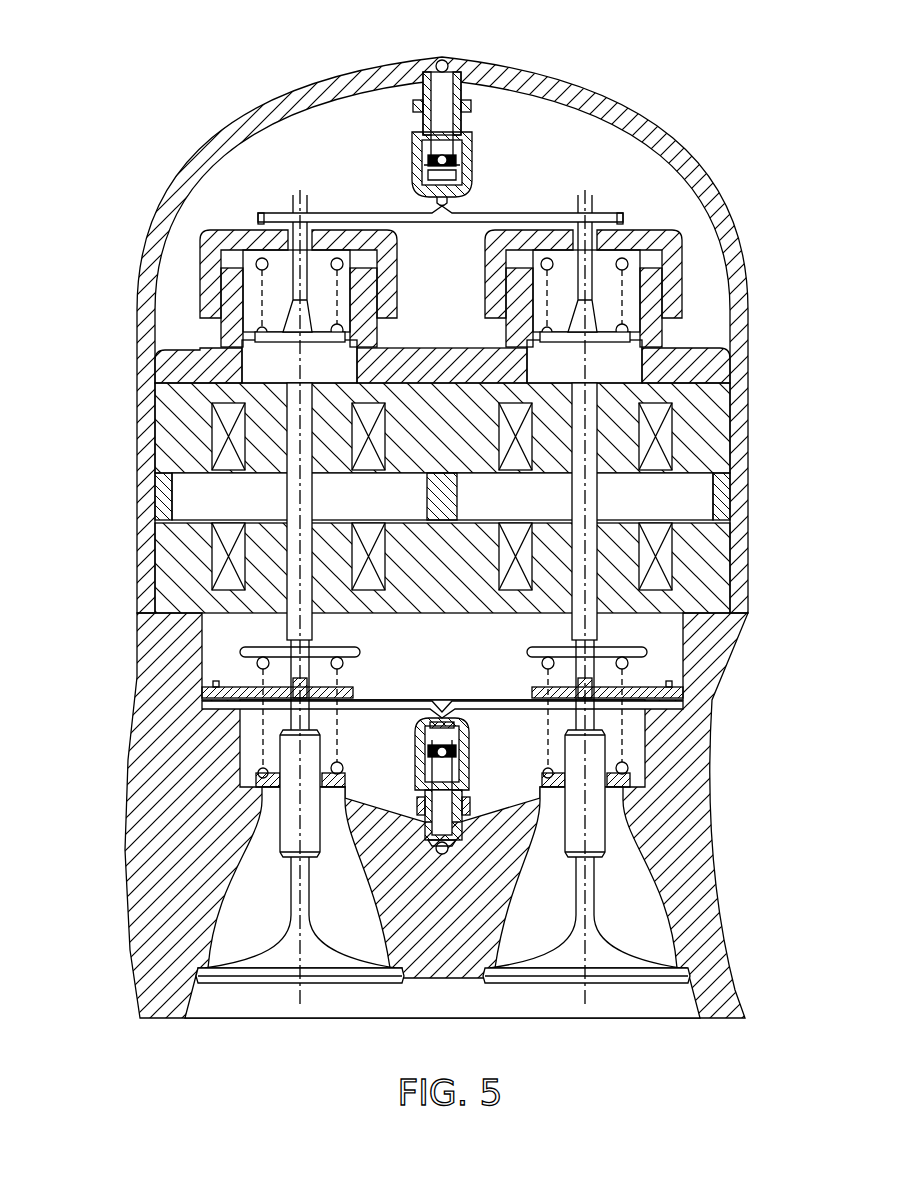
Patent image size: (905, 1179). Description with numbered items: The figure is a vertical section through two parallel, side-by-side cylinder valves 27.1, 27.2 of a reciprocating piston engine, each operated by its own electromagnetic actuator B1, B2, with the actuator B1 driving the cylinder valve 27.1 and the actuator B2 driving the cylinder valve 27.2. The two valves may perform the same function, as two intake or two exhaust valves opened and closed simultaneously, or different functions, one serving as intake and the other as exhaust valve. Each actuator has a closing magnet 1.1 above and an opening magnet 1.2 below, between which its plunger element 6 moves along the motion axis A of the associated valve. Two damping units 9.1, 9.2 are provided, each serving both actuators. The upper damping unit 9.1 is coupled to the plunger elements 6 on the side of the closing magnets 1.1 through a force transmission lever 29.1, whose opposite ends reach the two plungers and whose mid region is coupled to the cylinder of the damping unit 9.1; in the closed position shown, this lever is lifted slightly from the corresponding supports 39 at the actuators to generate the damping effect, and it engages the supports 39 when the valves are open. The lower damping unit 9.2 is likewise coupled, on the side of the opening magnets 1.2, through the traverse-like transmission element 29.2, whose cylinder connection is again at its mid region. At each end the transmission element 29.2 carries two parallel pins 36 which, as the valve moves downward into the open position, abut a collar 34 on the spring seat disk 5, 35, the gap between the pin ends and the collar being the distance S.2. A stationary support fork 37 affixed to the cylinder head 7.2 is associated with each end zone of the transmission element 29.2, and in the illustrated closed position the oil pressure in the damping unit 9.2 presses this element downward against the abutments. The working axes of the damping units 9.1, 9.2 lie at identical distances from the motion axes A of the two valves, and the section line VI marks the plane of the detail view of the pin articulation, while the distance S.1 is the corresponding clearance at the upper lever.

The damping unit 9.1 is at (470, 152).
The force transmission lever 29.1 is at (533, 212).
The support 39 is at (624, 216).
The plunger element 6 is at (300, 360).
The electromagnetic actuator B2 is at (120, 402).
The electromagnetic actuator B1 is at (765, 395).
The closing magnet 1.1 is at (165, 425).
The spring seat disk 5 is at (714, 487).
The upper gap S.1 is at (735, 473).
The opening magnet 1.2 is at (168, 548).
The section line VI is at (217, 672).
The spring seat disk 35 is at (635, 648).
The distance S.2 is at (365, 647).
The transmission element 29.2 is at (452, 703).
The support fork 37 is at (238, 702).
The pin 36 is at (583, 702).
The collar 34 is at (680, 700).
The damping unit 9.2 is at (440, 815).
The cylinder head 7.2 is at (236, 760).
The cylinder valve 27.2 is at (290, 962).
The cylinder valve 27.1 is at (600, 950).
The motion axis A is at (298, 1000).